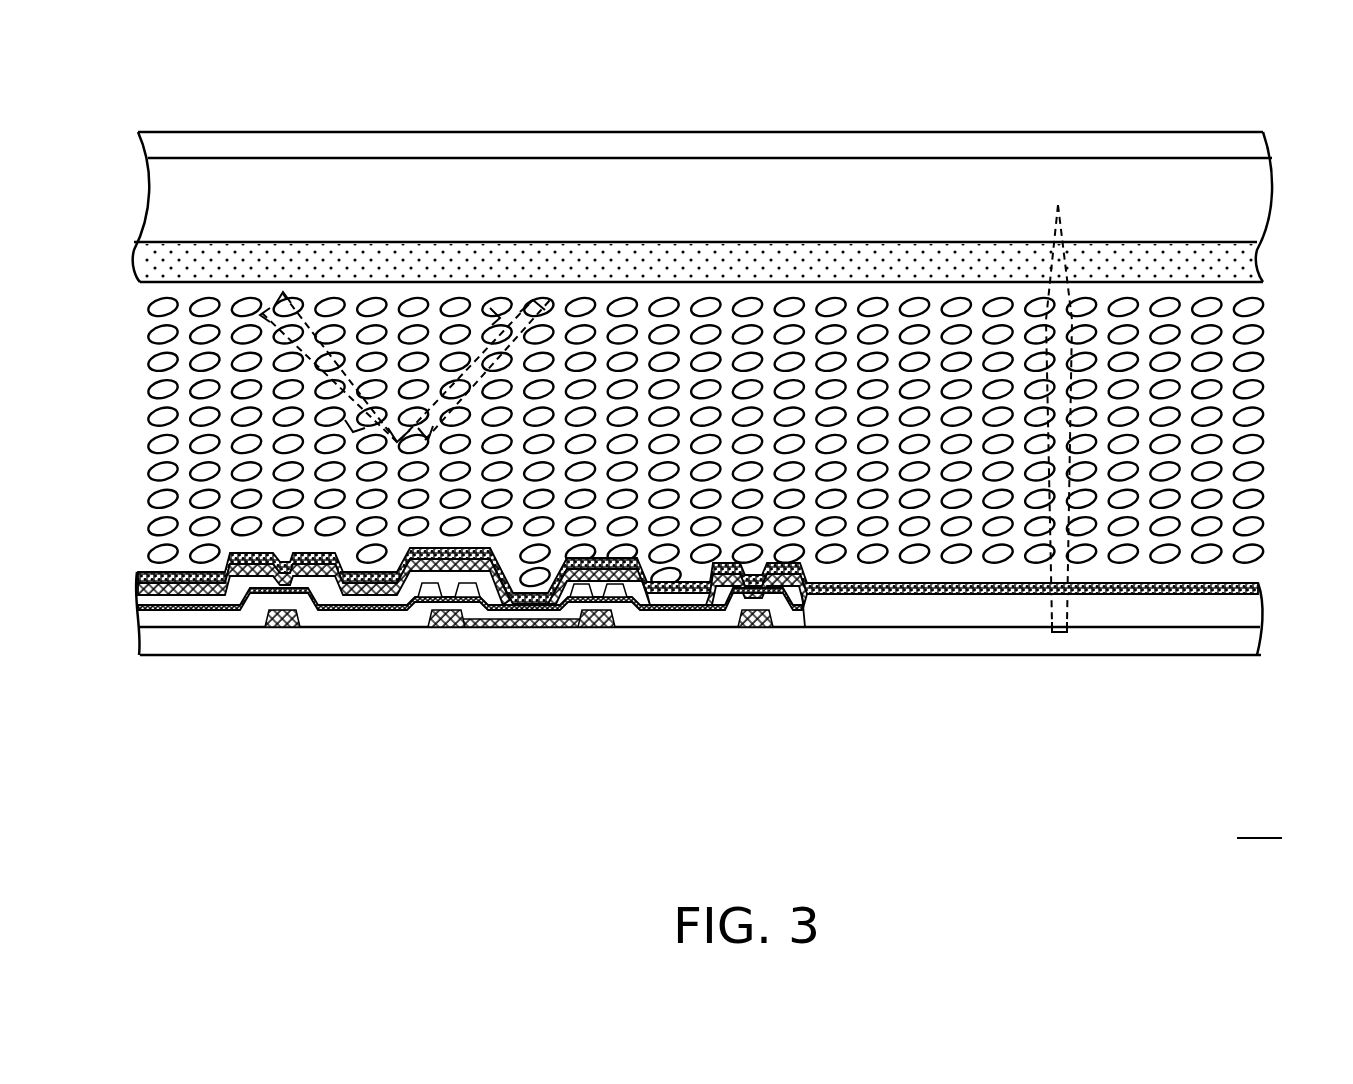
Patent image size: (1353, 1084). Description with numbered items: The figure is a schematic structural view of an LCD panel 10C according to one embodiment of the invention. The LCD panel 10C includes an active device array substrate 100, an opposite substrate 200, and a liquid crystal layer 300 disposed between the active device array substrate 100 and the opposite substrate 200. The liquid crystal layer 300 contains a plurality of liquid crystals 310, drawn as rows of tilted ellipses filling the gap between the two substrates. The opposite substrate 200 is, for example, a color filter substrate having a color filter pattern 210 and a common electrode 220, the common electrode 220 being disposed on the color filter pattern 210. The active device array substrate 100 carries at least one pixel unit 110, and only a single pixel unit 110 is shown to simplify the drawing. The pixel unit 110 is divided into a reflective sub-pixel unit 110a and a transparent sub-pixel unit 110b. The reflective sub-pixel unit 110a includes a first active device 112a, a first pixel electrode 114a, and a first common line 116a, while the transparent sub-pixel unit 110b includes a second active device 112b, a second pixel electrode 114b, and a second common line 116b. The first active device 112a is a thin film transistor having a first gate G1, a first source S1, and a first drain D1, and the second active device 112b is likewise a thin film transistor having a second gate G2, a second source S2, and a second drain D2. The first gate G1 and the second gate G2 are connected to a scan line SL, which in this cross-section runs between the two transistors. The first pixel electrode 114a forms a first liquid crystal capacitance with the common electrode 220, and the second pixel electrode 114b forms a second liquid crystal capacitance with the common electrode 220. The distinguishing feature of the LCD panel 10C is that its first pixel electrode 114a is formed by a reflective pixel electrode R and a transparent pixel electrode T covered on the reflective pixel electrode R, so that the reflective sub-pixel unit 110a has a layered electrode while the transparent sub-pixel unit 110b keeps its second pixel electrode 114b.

The LCD panel 10C is at (1259, 821).
The active device array substrate 100 is at (1290, 580).
The pixel unit 110 is at (698, 705).
The reflective sub-pixel unit 110a is at (698, 680).
The transparent sub-pixel unit 110b is at (674, 698).
The first active device 112a is at (461, 673).
The second active device 112b is at (613, 674).
The first pixel electrode 114a is at (698, 656).
The second pixel electrode 114b is at (697, 592).
The first common line 116a is at (278, 628).
The second common line 116b is at (763, 687).
The scan line SL is at (528, 625).
The transparent pixel electrode T is at (349, 580).
The reflective pixel electrode R is at (380, 592).
The first drain D1 is at (434, 598).
The first gate G1 is at (447, 626).
The first source S1 is at (466, 598).
The second source S2 is at (584, 598).
The second gate G2 is at (598, 626).
The second drain D2 is at (613, 598).
The opposite substrate 200 is at (743, 178).
The color filter pattern 210 is at (797, 190).
The common electrode 220 is at (895, 258).
The liquid crystal layer 300 is at (702, 418).
The liquid crystals 310 is at (170, 304).